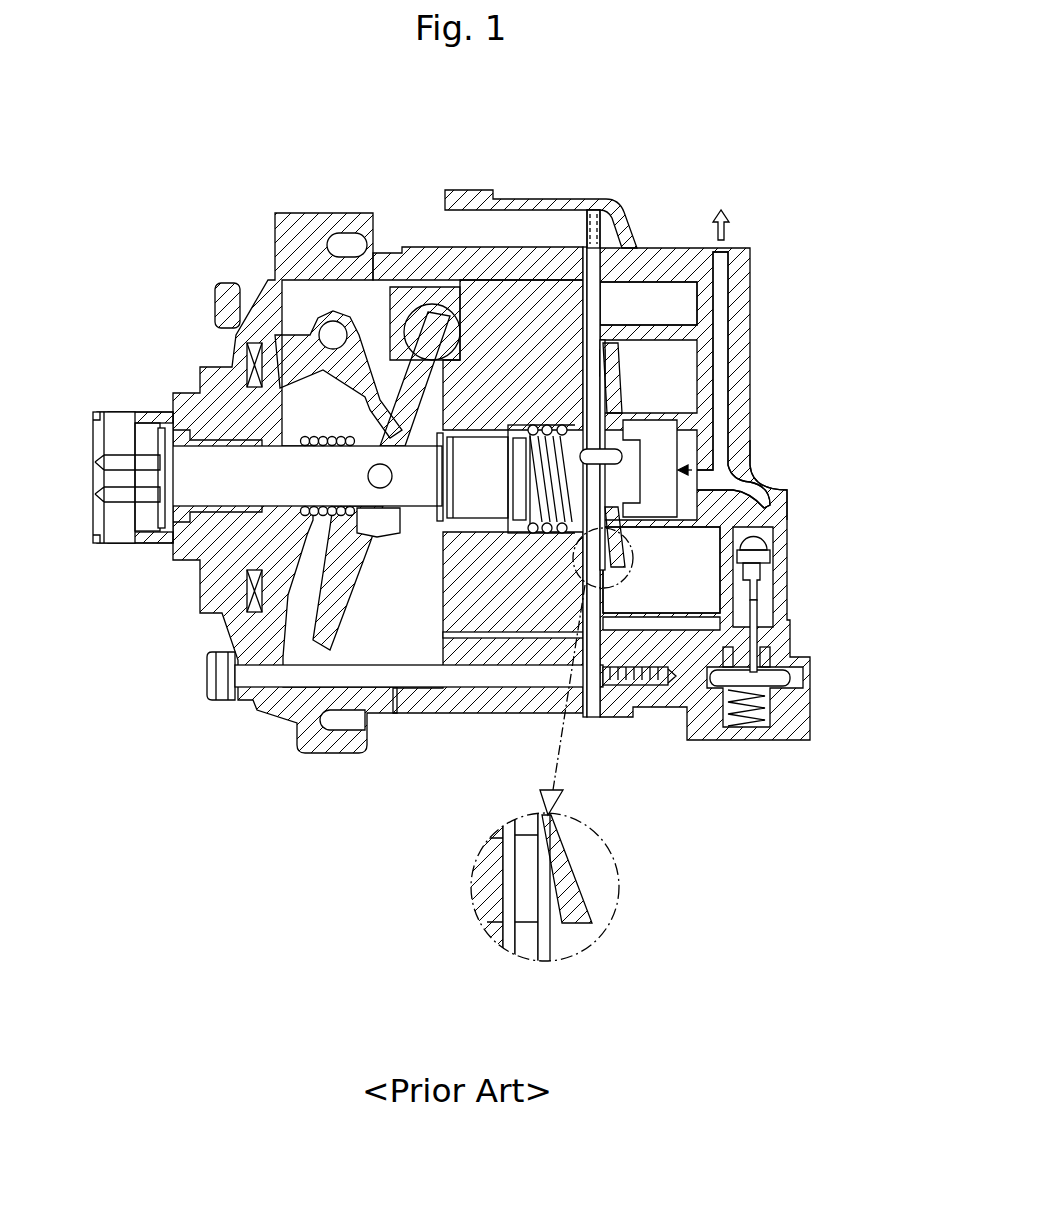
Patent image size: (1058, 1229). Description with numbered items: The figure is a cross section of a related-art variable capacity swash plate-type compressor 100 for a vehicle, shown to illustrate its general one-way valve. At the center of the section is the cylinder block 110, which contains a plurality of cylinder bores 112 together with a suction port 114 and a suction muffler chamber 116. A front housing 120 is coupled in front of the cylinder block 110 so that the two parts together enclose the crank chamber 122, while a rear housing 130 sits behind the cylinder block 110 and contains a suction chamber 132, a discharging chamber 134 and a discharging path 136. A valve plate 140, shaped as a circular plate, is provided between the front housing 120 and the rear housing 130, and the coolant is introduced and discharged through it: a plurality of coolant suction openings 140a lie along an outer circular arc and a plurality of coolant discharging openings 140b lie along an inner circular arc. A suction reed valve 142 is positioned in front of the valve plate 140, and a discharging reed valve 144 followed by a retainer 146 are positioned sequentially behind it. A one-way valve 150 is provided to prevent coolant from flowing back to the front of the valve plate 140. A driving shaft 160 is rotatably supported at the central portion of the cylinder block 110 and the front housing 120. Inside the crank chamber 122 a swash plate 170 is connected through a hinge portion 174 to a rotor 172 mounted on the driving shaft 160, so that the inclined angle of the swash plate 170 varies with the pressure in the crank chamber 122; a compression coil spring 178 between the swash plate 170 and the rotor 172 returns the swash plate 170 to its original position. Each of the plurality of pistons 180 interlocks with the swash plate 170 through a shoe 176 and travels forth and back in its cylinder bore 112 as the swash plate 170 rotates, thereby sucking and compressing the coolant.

The variable capacity swash plate-type compressor 100 is at (270, 84).
The cylinder block 110 is at (457, 710).
The cylinder bore 112 is at (440, 262).
The suction port 114 is at (455, 290).
The suction muffler chamber 116 is at (529, 224).
The front housing 120 is at (280, 713).
The crank chamber 122 is at (390, 632).
The rear housing 130 is at (648, 692).
The suction chamber 132 is at (682, 313).
The discharging chamber 134 is at (692, 585).
The discharging path 136 is at (720, 397).
The valve plate 140 is at (598, 707).
The coolant suction opening 140a is at (606, 300).
The coolant discharging opening 140b is at (604, 363).
The suction reed valve 142 is at (583, 300).
The discharging reed valve 144 is at (604, 345).
The retainer 146 is at (620, 398).
The one-way valve 150 is at (784, 483).
The driving shaft 160 is at (118, 497).
The swash plate 170 is at (338, 643).
The rotor 172 is at (232, 380).
The hinge portion 174 is at (305, 312).
The shoe 176 is at (382, 305).
The compression coil spring 178 is at (315, 520).
The piston 180 is at (472, 307).